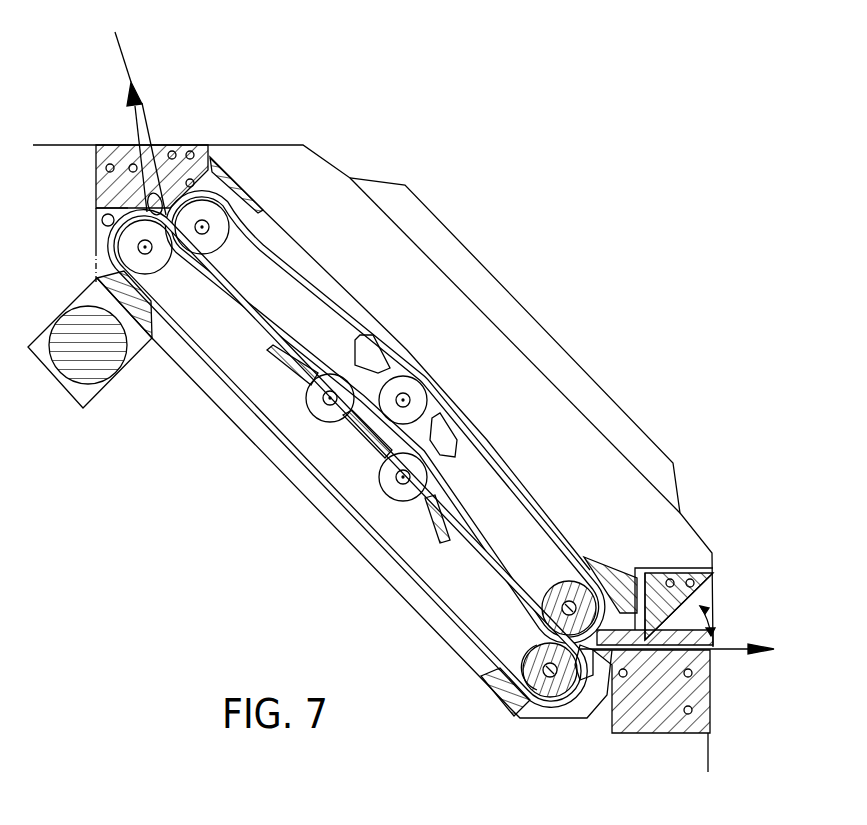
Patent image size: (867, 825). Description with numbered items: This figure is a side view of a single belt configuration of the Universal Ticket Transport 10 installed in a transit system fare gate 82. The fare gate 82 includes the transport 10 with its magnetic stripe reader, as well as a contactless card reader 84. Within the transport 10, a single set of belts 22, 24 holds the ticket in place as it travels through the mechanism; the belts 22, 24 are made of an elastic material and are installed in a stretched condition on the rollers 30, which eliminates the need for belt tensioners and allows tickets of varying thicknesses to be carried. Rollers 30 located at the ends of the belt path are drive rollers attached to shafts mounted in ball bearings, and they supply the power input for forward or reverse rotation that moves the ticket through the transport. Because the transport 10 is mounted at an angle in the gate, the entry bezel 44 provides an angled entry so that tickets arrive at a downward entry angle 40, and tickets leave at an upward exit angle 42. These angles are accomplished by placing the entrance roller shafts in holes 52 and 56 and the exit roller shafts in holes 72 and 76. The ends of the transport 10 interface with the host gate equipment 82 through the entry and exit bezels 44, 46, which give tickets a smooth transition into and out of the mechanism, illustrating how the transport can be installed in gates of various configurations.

The Universal Ticket Transport 10 is at (308, 263).
The belt 22 is at (498, 474).
The belt 24 is at (415, 580).
The roller 30 is at (412, 392).
The downward entry angle 40 is at (697, 638).
The upward exit angle 42 is at (140, 123).
The entry bezel 44 is at (697, 568).
The exit bezel 46 is at (192, 146).
The hole 52 is at (548, 673).
The hole 56 is at (569, 582).
The hole 72 is at (143, 247).
The hole 76 is at (204, 228).
The fare gate 82 is at (297, 152).
The contactless card reader 84 is at (462, 256).